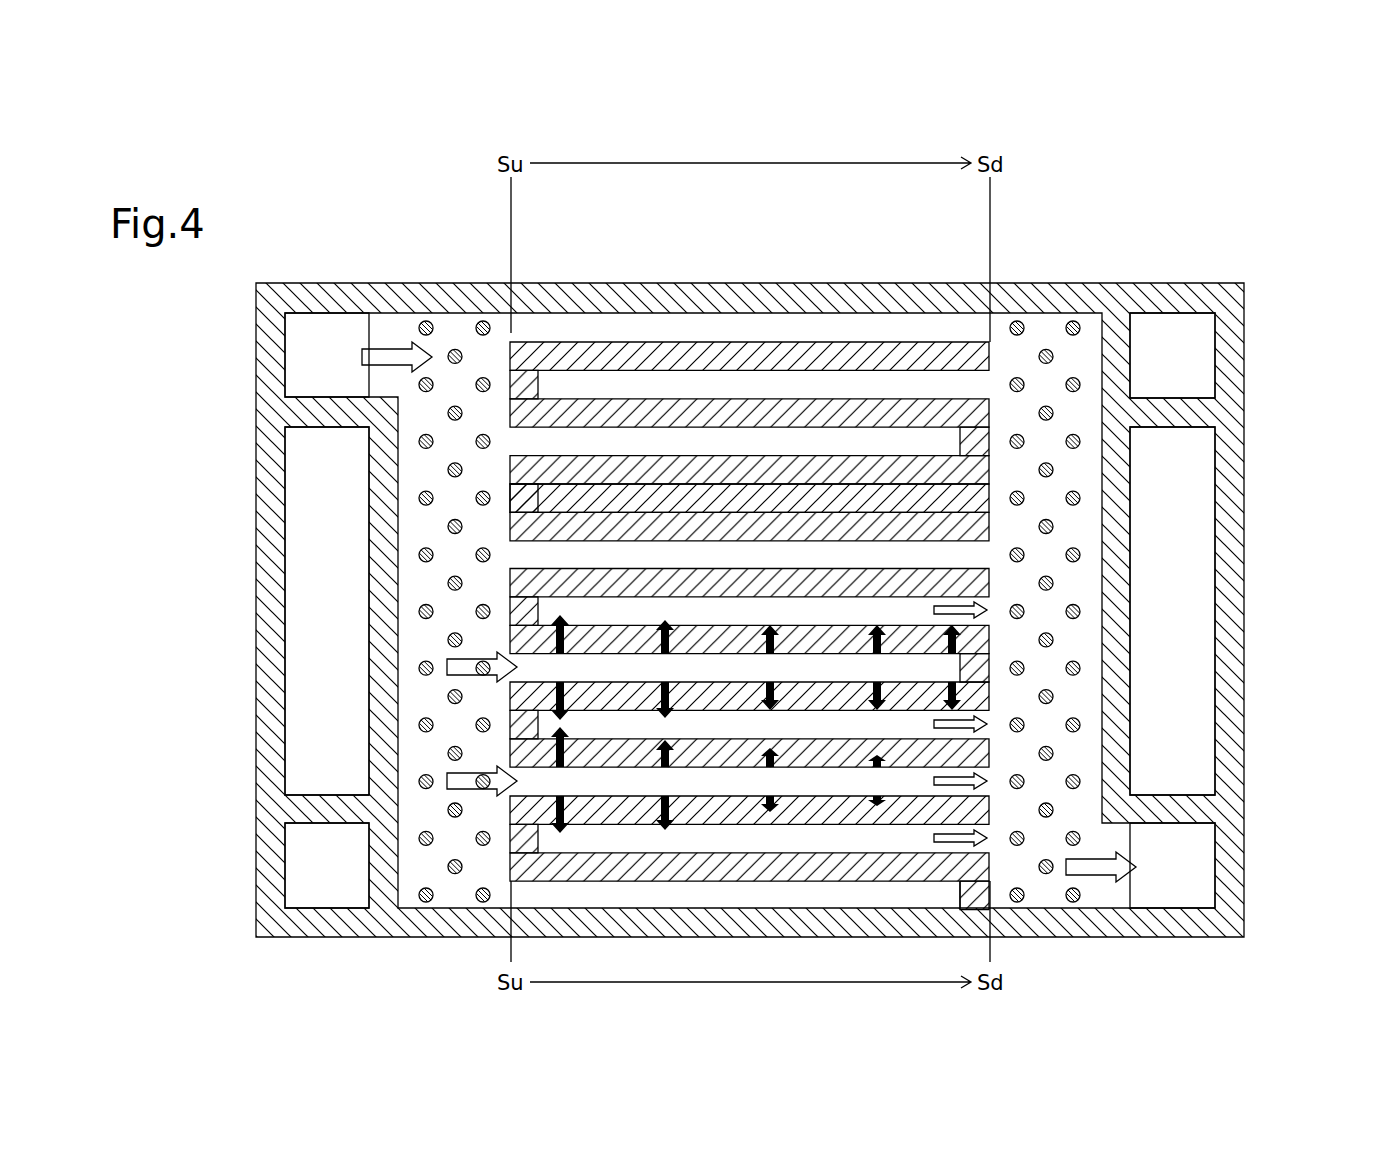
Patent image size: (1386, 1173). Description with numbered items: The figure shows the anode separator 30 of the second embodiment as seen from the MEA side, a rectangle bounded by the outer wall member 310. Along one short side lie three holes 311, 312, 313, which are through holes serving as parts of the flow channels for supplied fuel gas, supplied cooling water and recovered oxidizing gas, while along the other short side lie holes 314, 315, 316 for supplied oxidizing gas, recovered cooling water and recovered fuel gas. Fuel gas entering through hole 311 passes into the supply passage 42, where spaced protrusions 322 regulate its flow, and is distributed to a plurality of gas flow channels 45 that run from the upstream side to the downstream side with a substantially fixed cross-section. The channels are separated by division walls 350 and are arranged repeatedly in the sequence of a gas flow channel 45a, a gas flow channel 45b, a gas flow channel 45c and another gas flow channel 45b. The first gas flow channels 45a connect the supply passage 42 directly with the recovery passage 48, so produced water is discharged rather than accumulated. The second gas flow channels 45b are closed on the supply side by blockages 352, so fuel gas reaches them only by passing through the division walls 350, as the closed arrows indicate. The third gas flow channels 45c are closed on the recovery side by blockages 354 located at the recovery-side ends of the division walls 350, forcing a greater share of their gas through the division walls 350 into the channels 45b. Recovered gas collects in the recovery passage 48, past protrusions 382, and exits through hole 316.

The anode separator 30 is at (1299, 240).
The outer wall member 310 is at (1115, 300).
The hole 311 is at (306, 336).
The hole 312 is at (306, 582).
The hole 313 is at (306, 848).
The hole 314 is at (1194, 334).
The hole 315 is at (1194, 584).
The hole 316 is at (1194, 846).
The supply passage 42 is at (467, 327).
The protrusions 322 is at (426, 327).
The recovery passage 48 is at (1032, 327).
The protrusions 382 is at (1073, 327).
The gas flow channels 45 is at (918, 547).
The first gas flow channels 45a is at (602, 328).
The second gas flow channels 45b is at (818, 498).
The third gas flow channels 45c is at (745, 445).
The division walls 350 is at (906, 462).
The blockages 352 is at (525, 497).
The blockages 354 is at (975, 668).